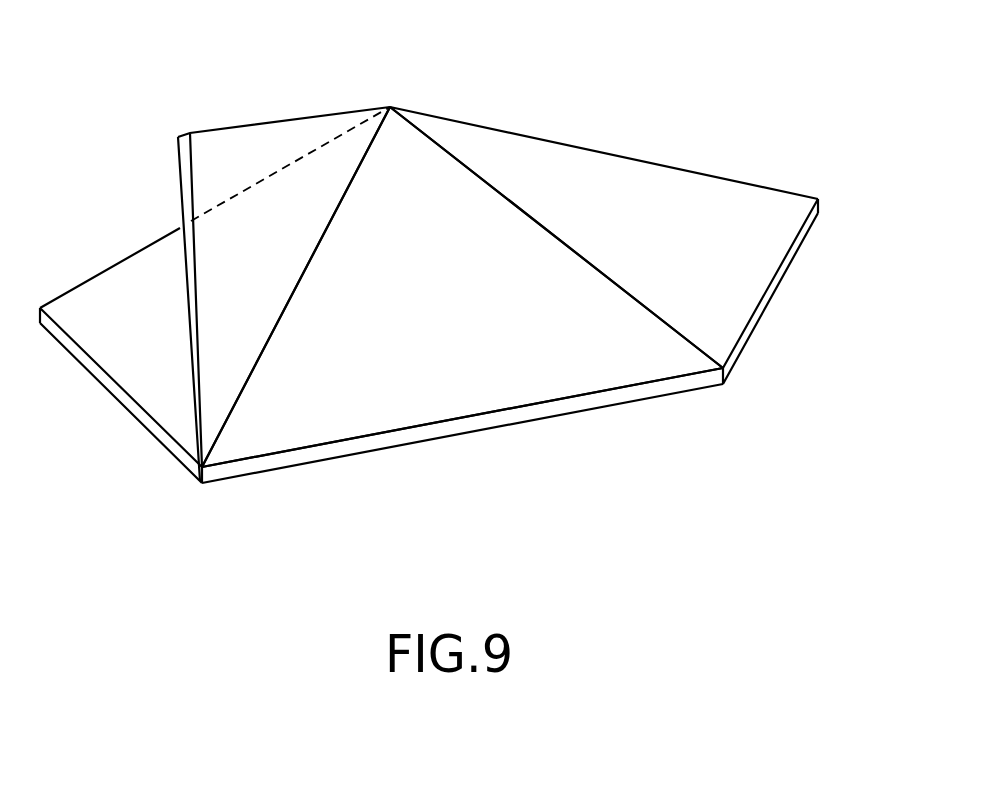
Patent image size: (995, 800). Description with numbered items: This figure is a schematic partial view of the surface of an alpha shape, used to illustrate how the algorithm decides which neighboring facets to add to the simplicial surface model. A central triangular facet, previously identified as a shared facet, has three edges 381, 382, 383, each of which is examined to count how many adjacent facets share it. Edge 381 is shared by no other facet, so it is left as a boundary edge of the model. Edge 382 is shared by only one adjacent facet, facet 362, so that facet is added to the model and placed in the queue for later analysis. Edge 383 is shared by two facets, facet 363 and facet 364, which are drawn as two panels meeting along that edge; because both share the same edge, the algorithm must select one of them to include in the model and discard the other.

The facet 362 is at (619, 210).
The facet 363 is at (228, 138).
The facet 364 is at (105, 343).
The edge 381 is at (411, 296).
The edge 382 is at (653, 317).
The edge 383 is at (352, 183).